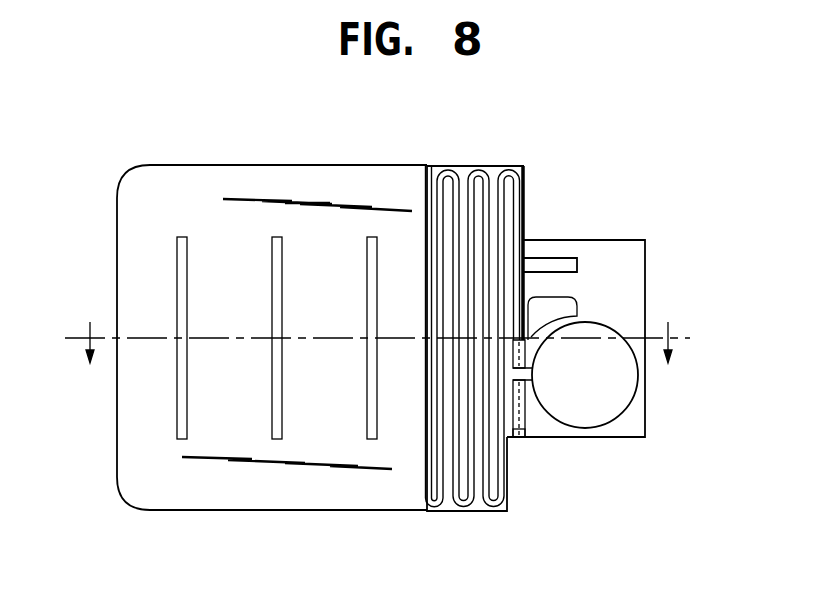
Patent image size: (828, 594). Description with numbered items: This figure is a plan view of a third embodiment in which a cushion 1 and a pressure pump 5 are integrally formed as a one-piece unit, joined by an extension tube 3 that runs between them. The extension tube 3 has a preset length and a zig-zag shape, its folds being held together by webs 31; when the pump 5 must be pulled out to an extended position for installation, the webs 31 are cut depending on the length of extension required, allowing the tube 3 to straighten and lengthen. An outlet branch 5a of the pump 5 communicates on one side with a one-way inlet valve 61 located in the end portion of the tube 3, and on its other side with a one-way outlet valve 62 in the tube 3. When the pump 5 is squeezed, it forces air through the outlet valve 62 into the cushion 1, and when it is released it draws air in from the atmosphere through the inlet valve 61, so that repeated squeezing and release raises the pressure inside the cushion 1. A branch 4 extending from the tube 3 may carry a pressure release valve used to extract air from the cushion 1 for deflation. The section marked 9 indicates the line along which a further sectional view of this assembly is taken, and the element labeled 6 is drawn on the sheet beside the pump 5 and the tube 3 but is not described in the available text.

The cushion 1 is at (313, 178).
The extension tube 3 is at (499, 176).
The webs 31 is at (508, 192).
The branch 4 is at (570, 258).
The pressure pump 5 is at (622, 418).
The outlet branch 5a is at (525, 376).
The plate 6 is at (524, 402).
The one-way inlet valve 61 is at (517, 442).
The one-way outlet valve 62 is at (534, 350).
The section line IX-IX 9 is at (377, 363).